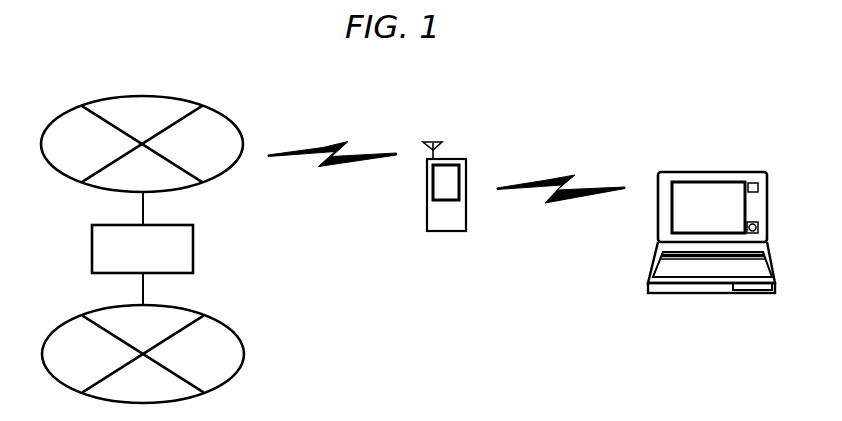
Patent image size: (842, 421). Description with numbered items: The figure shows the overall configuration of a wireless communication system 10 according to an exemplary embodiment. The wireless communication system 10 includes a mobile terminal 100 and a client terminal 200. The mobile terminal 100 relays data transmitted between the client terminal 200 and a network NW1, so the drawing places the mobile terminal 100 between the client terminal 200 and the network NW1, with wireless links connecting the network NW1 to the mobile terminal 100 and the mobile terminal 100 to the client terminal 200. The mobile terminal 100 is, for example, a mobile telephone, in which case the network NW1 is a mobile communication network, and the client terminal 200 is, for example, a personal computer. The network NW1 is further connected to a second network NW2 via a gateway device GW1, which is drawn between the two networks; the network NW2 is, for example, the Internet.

The network NW1 is at (243, 135).
The network NW2 is at (265, 326).
The gateway device GW1 is at (142, 265).
The mobile terminal 100 is at (466, 160).
The client terminal 200 is at (677, 173).
The wireless communication system 10 is at (531, 345).